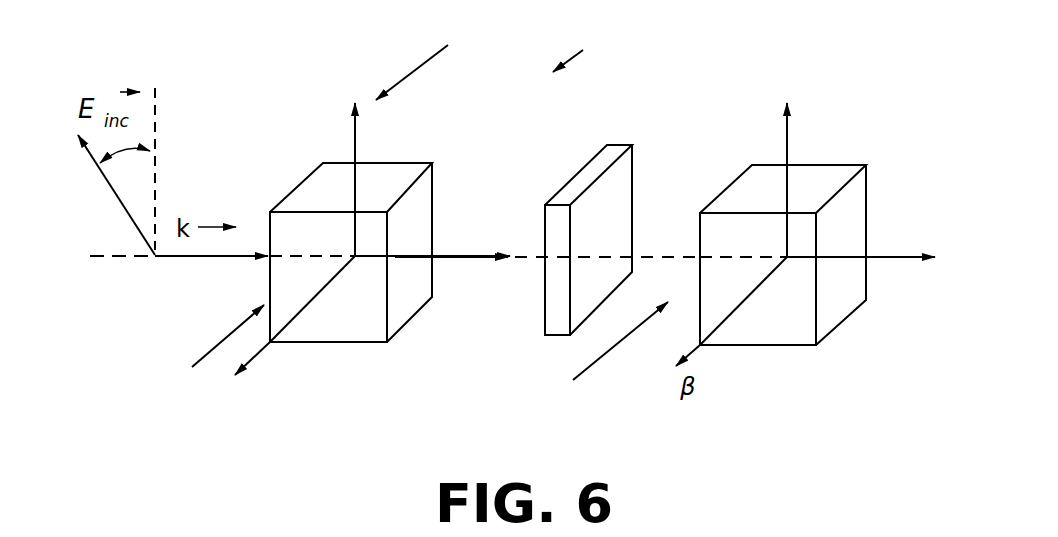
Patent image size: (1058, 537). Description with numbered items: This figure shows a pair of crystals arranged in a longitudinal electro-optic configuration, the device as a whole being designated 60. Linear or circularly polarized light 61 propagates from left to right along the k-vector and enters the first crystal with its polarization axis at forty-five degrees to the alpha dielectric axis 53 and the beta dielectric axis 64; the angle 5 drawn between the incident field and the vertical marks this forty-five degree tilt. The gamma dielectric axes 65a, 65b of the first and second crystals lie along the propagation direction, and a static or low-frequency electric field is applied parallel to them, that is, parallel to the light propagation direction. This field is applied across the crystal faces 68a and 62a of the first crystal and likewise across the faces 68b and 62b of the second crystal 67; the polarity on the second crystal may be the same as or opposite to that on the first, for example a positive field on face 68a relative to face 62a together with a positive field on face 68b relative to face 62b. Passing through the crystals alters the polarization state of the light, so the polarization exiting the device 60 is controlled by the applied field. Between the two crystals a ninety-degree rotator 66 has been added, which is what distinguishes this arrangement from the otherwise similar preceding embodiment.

The angle between incident polarization and alpha axis 5 is at (135, 140).
The α dielectric axis 53 is at (403, 78).
The crystal device in longitudinal electro-optic configuration 60 is at (591, 51).
The polarized light 61 is at (197, 258).
The crystal face of first crystal 62a is at (427, 322).
The crystal face of second crystal 62b is at (840, 285).
The β dielectric axis 64 is at (253, 350).
The gamma axis of first crystal 65a is at (460, 253).
The gamma axis of second crystal 65b is at (890, 253).
The 90-degree rotator 66 is at (595, 163).
The second crystal body 67 is at (813, 246).
The crystal face of first crystal 68a is at (217, 333).
The crystal face of second crystal 68b is at (610, 353).